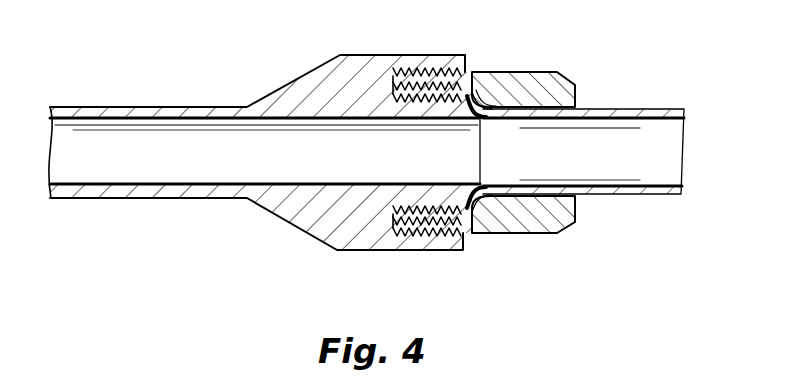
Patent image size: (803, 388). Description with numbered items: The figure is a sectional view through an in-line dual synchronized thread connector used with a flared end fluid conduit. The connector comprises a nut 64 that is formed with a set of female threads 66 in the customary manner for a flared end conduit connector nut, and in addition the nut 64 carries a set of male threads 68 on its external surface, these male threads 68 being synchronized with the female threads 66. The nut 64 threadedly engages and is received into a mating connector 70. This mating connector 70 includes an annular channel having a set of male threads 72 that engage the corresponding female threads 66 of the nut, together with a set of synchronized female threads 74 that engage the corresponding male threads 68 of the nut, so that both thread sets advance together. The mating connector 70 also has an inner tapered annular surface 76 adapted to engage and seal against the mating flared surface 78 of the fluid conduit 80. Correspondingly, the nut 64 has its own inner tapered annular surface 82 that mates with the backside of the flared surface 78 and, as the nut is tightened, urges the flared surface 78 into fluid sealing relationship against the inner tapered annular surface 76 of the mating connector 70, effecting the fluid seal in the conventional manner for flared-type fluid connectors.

The nut 64 is at (560, 90).
The female threads 66 is at (440, 73).
The male threads 68 is at (405, 71).
The mating connector 70 is at (310, 83).
The male threads 72 is at (410, 230).
The synchronized female threads 74 is at (435, 228).
The inner tapered annular surface 76 is at (474, 95).
The flared surface 78 is at (485, 214).
The fluid conduit 80 is at (637, 194).
The inner tapered annular surface 82 is at (508, 103).